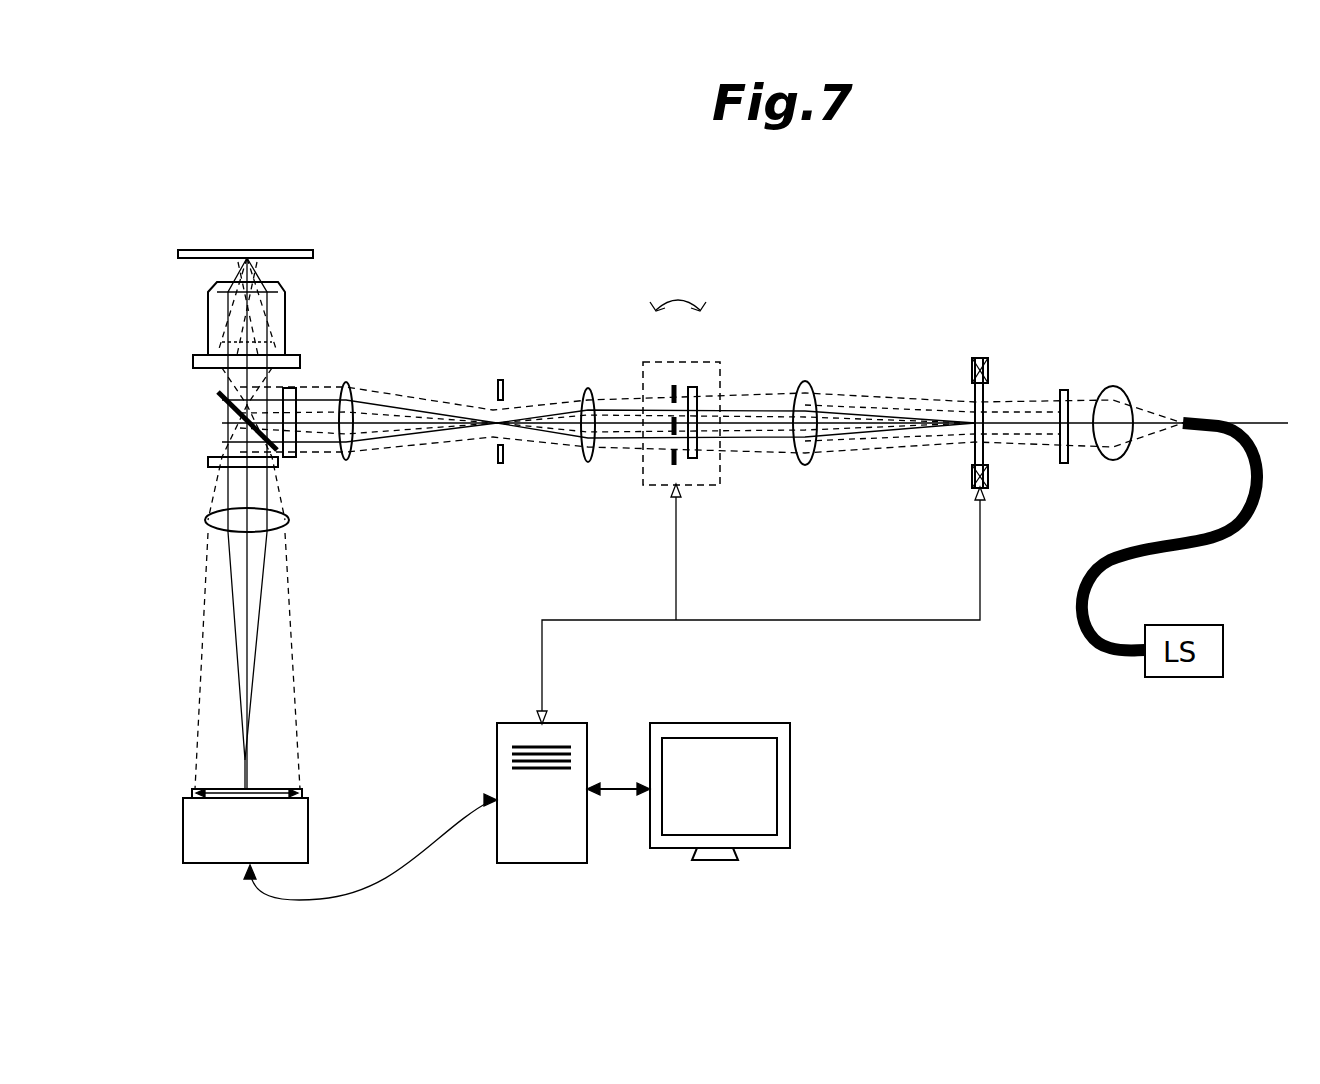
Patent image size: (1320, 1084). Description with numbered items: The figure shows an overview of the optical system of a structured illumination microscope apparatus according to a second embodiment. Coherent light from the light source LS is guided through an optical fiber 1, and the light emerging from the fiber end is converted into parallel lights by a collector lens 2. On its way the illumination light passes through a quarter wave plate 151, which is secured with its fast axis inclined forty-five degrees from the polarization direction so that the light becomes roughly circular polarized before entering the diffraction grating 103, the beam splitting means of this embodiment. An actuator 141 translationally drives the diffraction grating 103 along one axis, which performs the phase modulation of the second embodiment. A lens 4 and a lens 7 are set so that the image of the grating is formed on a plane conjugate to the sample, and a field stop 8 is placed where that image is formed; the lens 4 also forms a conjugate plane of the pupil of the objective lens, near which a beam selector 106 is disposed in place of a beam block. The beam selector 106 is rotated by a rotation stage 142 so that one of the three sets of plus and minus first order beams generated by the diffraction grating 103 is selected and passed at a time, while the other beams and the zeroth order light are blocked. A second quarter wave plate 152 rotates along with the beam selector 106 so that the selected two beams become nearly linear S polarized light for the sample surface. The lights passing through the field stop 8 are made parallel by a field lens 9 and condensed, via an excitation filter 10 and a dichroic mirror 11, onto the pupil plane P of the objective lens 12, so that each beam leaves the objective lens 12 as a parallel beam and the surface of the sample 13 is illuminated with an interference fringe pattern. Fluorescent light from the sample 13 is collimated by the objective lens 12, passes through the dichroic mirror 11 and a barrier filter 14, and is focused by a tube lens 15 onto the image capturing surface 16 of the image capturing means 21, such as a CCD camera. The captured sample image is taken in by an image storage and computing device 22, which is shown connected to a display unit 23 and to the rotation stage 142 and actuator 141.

The optical fiber 1 is at (1200, 413).
The collector lens 2 is at (1116, 387).
The lens 4 is at (808, 387).
The lens 7 is at (589, 388).
The field stop 8 is at (501, 380).
The field lens 9 is at (352, 386).
The excitation filter 10 is at (295, 390).
The dichroic mirror 11 is at (218, 400).
The objective lens 12 is at (285, 308).
The sample 13 is at (277, 248).
The barrier filter 14 is at (208, 462).
The tube lens 15 is at (210, 524).
The image capturing surface 16 is at (217, 786).
The image capturing means 21 is at (183, 840).
The image storage and computing device 22 is at (558, 723).
The display 23 is at (713, 704).
The diffraction grating 103 is at (970, 402).
The beam selector 106 is at (673, 386).
The actuator 141 is at (972, 480).
The rotation stage 142 is at (698, 487).
The quarter wave plate 151 is at (1064, 463).
The second quarter wave plate 152 is at (697, 388).
The pupil plane P is at (278, 342).